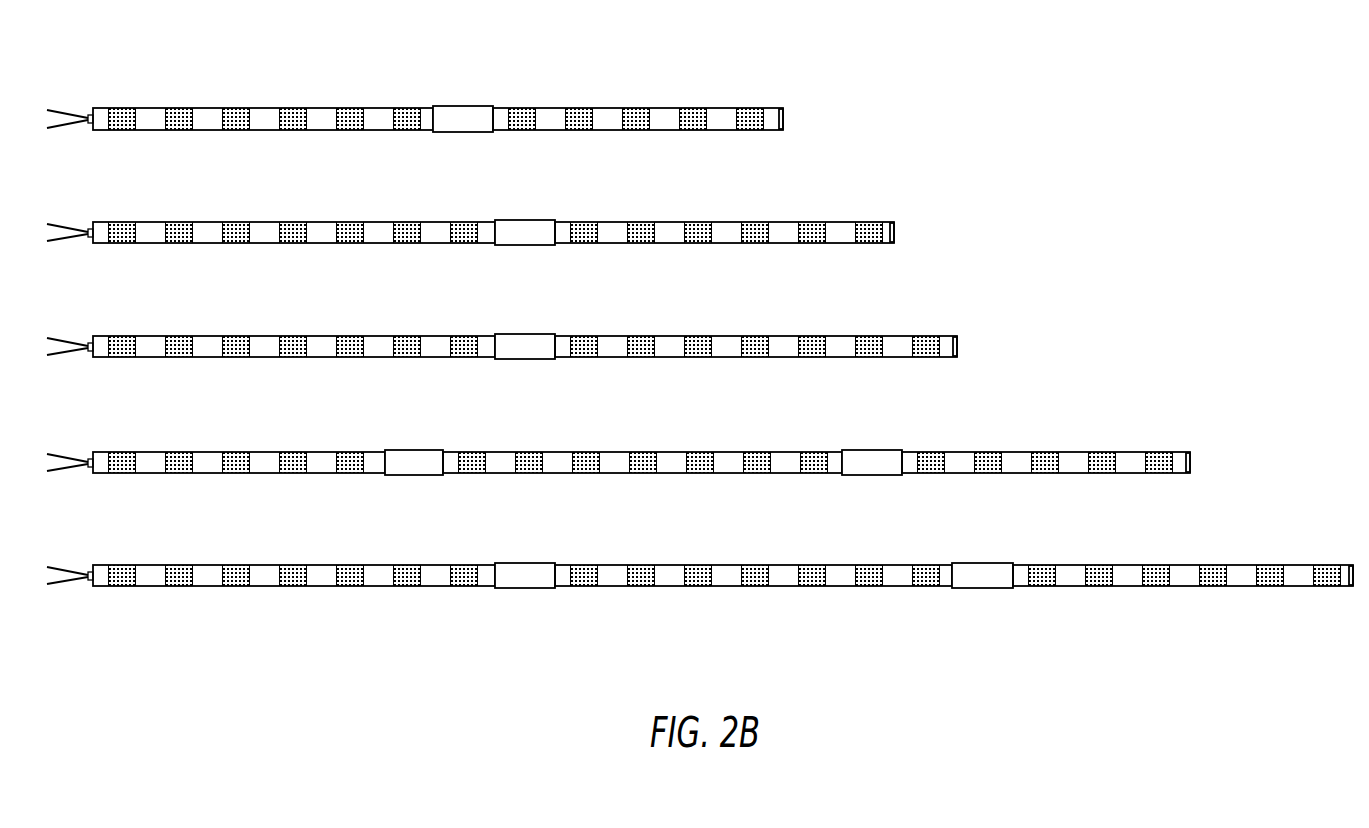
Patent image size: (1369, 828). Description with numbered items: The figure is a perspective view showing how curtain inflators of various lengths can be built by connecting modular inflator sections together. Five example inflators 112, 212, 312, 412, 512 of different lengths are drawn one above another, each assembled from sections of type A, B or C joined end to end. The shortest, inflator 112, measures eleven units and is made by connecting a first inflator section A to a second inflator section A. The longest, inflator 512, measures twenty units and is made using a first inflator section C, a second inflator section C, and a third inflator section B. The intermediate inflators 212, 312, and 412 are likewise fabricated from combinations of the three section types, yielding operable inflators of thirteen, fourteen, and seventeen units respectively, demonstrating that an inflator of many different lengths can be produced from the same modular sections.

The inflator 112 is at (104, 108).
The inflator 212 is at (104, 222).
The inflator 312 is at (104, 336).
The inflator 412 is at (104, 452).
The inflator 512 is at (104, 565).